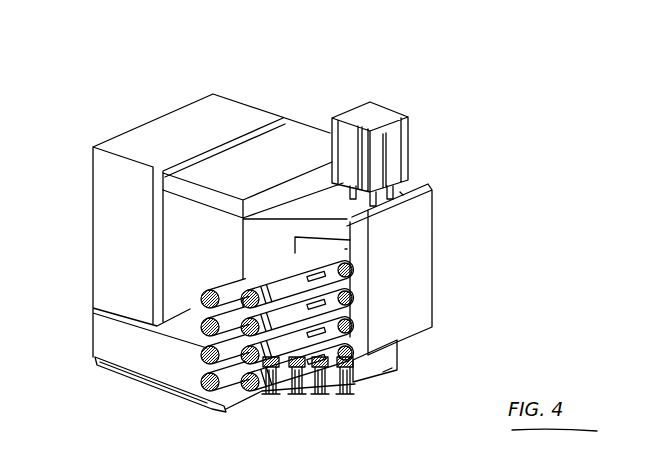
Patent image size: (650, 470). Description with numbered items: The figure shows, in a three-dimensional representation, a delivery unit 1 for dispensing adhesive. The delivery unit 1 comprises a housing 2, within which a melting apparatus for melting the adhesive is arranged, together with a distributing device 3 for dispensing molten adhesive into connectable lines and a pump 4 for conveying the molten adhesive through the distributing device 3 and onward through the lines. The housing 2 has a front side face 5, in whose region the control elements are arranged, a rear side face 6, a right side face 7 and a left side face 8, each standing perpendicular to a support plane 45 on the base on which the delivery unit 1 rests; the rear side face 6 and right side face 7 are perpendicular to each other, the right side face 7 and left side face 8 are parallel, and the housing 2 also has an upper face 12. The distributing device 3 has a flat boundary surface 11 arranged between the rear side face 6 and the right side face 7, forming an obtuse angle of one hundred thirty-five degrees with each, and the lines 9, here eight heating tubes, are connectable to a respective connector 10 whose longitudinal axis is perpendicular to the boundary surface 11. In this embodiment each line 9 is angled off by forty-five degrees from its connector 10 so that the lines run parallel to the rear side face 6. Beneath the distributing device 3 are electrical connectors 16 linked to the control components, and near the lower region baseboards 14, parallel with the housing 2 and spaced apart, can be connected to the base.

The delivery unit 1 is at (280, 87).
The housing 2 is at (82, 262).
The distributing device 3 is at (355, 223).
The pump 4 is at (406, 137).
The front side face 5 is at (149, 123).
The rear side face 6 is at (428, 283).
The right side face 7 is at (117, 293).
The left side face 8 is at (302, 123).
The lines 9 is at (262, 287).
The connector 10 is at (345, 249).
The boundary surface 11 is at (403, 192).
The upper face 12 is at (250, 152).
The baseboards 14 is at (142, 380).
The electrical connectors 16 is at (298, 397).
The support plane 45 is at (189, 402).